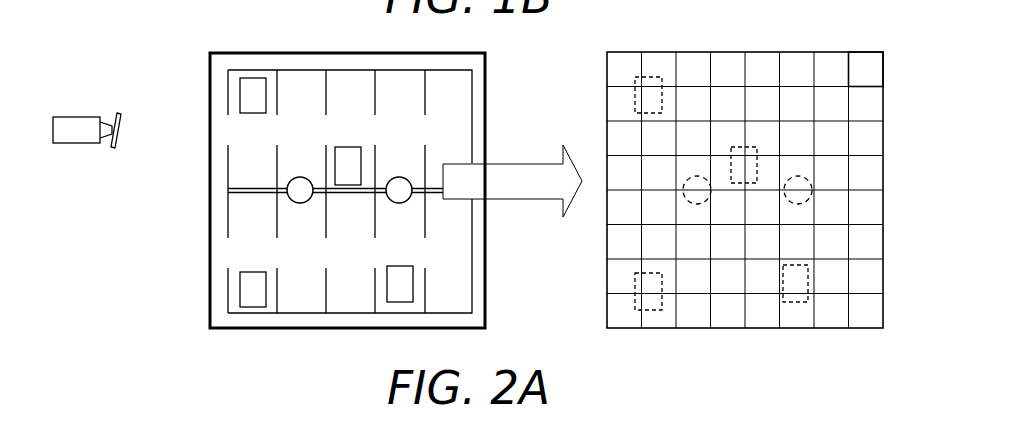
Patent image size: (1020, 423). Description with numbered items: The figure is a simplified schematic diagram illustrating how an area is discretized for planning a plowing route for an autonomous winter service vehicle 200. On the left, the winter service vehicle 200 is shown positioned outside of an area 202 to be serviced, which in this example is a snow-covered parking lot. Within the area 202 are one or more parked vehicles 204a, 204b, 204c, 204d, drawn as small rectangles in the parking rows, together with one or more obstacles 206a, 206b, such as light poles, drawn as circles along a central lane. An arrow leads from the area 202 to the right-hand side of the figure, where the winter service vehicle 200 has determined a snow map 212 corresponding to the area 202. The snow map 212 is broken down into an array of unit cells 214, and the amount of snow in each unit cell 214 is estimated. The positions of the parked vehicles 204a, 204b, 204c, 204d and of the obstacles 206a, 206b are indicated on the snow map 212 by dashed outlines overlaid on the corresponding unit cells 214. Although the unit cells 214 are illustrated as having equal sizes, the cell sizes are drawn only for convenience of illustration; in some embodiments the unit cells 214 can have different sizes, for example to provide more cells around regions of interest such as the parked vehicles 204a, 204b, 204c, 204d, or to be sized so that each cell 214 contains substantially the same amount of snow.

The winter service vehicle 200 is at (78, 117).
The area 202 is at (210, 57).
The parked vehicle 204a is at (252, 83).
The parked vehicle 204b is at (343, 155).
The parked vehicle 204c is at (250, 274).
The parked vehicle 204d is at (390, 272).
The obstacle 206a is at (299, 178).
The obstacle 206b is at (397, 178).
The snow map 212 is at (607, 66).
The unit cell 214 is at (872, 58).